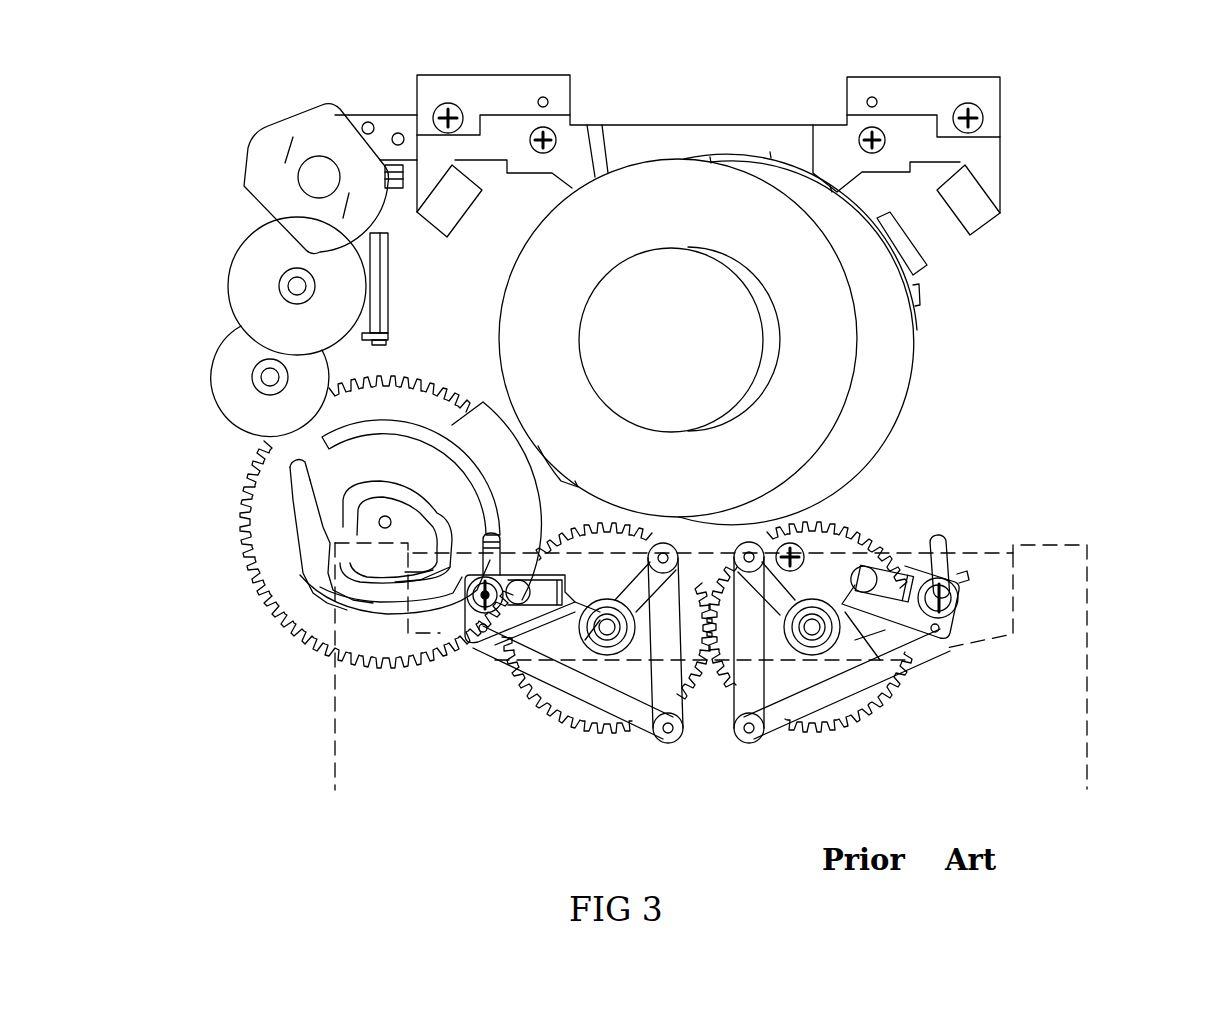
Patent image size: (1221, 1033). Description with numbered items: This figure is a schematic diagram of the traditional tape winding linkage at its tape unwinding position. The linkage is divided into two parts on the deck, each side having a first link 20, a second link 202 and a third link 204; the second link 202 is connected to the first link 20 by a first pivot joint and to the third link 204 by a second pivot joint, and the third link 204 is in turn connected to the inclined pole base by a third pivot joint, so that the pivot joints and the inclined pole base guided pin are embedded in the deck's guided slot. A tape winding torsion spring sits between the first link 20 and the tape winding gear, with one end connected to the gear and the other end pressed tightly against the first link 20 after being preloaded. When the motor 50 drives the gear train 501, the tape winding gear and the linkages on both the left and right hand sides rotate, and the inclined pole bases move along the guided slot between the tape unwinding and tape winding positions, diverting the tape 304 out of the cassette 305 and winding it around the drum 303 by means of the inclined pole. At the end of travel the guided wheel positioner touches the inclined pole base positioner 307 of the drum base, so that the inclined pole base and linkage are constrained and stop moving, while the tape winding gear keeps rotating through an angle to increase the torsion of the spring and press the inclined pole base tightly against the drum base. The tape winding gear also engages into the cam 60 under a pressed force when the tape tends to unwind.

The first link 20 is at (783, 578).
The motor 50 is at (260, 147).
The cam 60 is at (266, 497).
The second link 202 is at (753, 694).
The third link 204 is at (833, 692).
The drum 303 is at (675, 190).
The tape 304 is at (965, 556).
The cassette 305 is at (1061, 648).
The inclined pole base positioner 307 is at (900, 162).
The gear train 501 is at (250, 274).